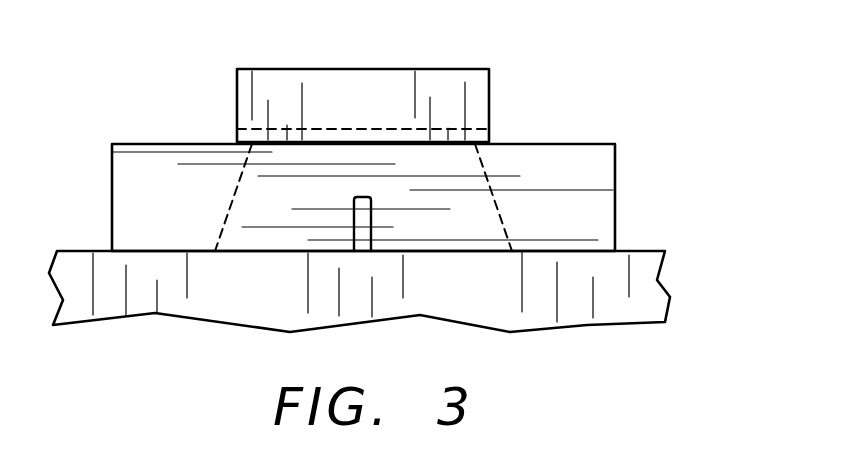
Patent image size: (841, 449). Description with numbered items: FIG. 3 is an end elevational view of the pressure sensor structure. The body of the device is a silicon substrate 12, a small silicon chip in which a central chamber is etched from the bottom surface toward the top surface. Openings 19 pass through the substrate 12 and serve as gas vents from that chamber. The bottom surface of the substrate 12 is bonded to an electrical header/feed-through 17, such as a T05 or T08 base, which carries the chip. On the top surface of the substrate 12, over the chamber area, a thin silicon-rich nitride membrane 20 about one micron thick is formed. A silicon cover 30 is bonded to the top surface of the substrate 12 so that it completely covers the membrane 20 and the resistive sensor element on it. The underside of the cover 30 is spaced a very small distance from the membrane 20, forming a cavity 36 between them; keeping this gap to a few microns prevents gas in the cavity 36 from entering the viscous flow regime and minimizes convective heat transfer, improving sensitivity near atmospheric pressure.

The silicon substrate 12 is at (567, 212).
The electrical header/feed-through 17 is at (533, 295).
The openings 19 is at (365, 233).
The silicon-rich nitride membrane 20 is at (372, 142).
The silicon cover 30 is at (436, 68).
The cavity 36 is at (443, 130).